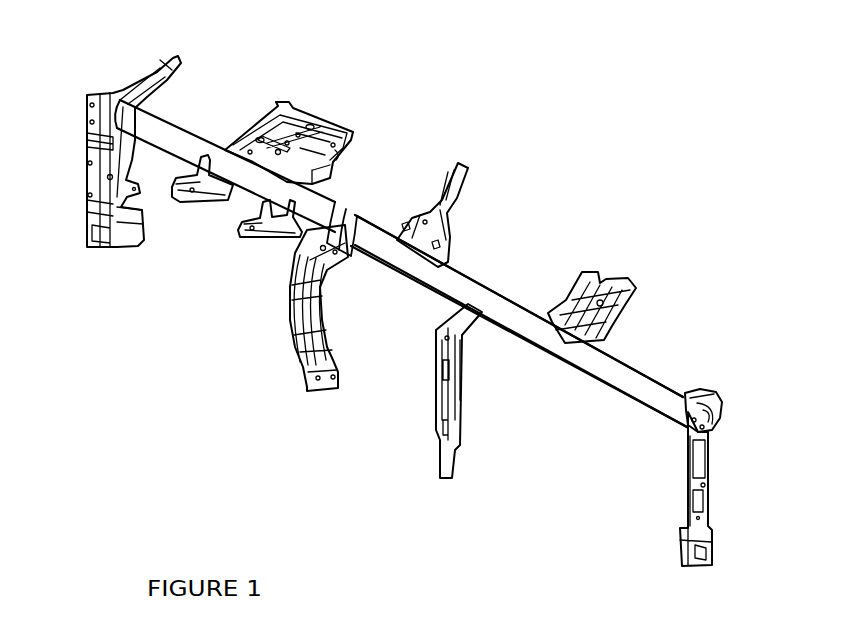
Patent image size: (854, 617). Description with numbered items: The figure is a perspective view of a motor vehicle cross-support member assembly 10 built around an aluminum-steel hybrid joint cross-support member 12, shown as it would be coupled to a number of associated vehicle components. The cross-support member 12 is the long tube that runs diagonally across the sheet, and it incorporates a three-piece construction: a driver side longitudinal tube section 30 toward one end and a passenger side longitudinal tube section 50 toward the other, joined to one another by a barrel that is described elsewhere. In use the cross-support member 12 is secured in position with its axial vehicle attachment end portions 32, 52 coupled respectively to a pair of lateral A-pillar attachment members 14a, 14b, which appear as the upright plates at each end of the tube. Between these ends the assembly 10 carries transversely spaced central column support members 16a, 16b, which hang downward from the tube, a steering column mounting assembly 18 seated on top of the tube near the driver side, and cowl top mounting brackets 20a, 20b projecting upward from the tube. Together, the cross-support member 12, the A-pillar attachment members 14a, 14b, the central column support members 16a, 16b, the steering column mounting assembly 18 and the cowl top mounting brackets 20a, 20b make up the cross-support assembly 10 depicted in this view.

The motor vehicle cross-support member assembly 10 is at (414, 169).
The aluminum-steel hybrid joint cross-support member 12 is at (472, 267).
The lateral A-pillar attachment member 14a is at (112, 177).
The lateral A-pillar attachment member 14b is at (705, 480).
The central column support member 16a is at (308, 371).
The central column support member 16b is at (435, 445).
The steering column mounting assembly 18 is at (298, 107).
The cowl top mounting bracket 20a is at (467, 177).
The cowl top mounting bracket 20b is at (608, 275).
The driver side longitudinal tube section 30 is at (242, 196).
The axial vehicle attachment end portion 32 is at (130, 115).
The passenger side longitudinal tube section 50 is at (576, 372).
The axial vehicle attachment end portion 52 is at (680, 400).